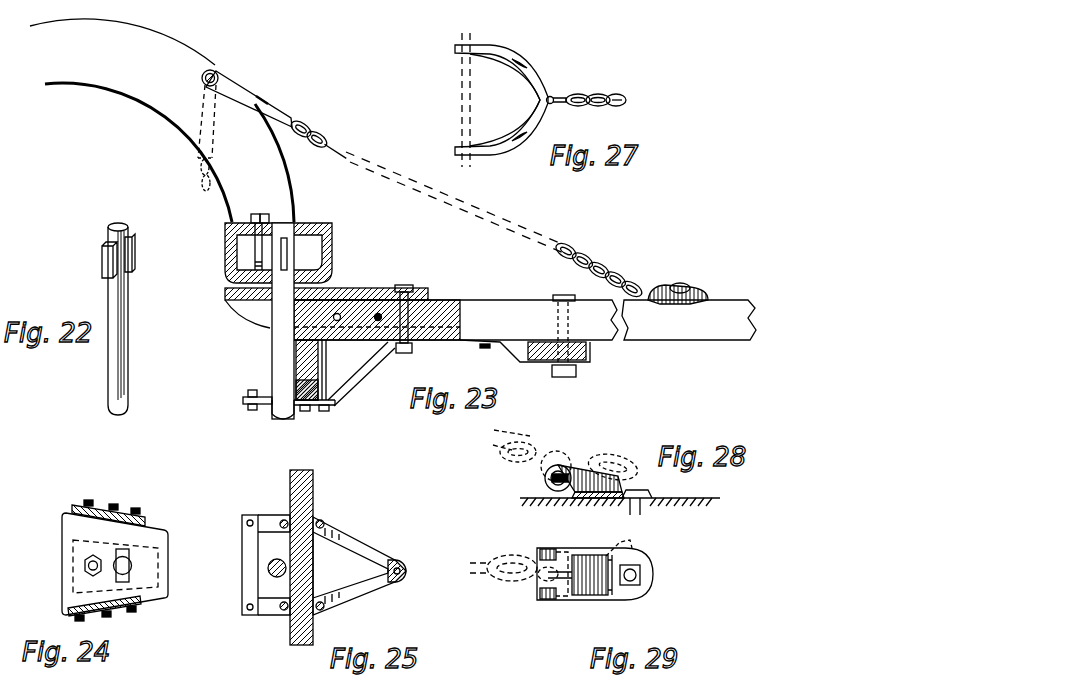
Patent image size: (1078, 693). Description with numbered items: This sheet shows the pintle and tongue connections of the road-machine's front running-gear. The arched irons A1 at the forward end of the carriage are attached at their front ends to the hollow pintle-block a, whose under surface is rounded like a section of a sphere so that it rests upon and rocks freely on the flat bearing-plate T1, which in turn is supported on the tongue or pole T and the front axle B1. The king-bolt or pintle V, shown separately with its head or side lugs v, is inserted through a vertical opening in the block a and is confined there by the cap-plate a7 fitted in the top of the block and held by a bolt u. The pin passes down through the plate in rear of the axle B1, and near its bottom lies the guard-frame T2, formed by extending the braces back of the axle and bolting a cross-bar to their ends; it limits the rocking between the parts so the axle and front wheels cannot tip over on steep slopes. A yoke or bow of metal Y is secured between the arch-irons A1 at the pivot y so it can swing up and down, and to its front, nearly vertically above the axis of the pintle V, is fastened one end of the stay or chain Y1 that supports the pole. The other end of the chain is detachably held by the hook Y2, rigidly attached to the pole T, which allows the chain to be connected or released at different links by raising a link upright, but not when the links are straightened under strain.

In FIG. 23, the arched irons A1 is at (162, 120).
In FIG. 24, the arched irons A1 is at (96, 510).
In FIG. 23, the yoke pivot y is at (212, 70).
In FIG. 23, the yoke Y is at (249, 99).
In FIG. 27, the yoke Y is at (510, 100).
In FIG. 23, the stay or chain Y1 is at (467, 209).
In FIG. 27, the stay or chain Y1 is at (606, 101).
In FIG. 23, the coupling or hook Y2 is at (688, 288).
In FIG. 28, the coupling or hook Y2 is at (566, 464).
In FIG. 29, the coupling or hook Y2 is at (600, 600).
In FIG. 23, the bolt u is at (259, 214).
In FIG. 24, the bolt u is at (93, 555).
In FIG. 23, the cap-plate a7 is at (325, 216).
In FIG. 23, the pintle-block a is at (225, 252).
In FIG. 24, the pintle-block a is at (73, 552).
In FIG. 23, the side lugs v is at (287, 253).
In FIG. 22, the side lugs v is at (102, 258).
In FIG. 24, the side lugs v is at (123, 565).
In FIG. 23, the bearing-plate T1 is at (366, 288).
In FIG. 23, the king-bolt or pintle V is at (245, 338).
In FIG. 22, the king-bolt or pintle V is at (134, 310).
In FIG. 25, the king-bolt or pintle V is at (284, 546).
In FIG. 23, the tongue or pole T is at (525, 336).
In FIG. 28, the tongue or pole T is at (620, 509).
In FIG. 23, the guard-frame T2 is at (248, 391).
In FIG. 25, the guard-frame T2 is at (270, 565).
In FIG. 23, the front axle B1 is at (305, 400).
In FIG. 25, the front axle B1 is at (300, 645).